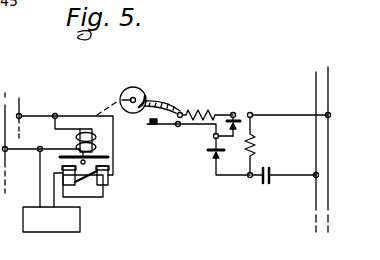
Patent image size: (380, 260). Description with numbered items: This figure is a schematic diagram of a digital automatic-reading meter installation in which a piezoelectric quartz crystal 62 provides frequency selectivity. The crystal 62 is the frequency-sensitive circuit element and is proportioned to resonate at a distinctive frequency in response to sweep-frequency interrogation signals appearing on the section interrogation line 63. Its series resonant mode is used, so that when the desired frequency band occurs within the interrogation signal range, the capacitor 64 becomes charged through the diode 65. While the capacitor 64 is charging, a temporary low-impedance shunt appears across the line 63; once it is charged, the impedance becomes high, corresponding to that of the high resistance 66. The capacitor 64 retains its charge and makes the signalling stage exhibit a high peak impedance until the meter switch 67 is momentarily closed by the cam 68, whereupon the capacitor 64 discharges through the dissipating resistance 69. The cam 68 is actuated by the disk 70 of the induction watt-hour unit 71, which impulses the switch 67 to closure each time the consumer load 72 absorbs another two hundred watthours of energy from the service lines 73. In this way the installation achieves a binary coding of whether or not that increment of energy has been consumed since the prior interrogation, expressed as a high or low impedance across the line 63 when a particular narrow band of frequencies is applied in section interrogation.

The piezoelectric quartz crystal 62 is at (268, 184).
The section interrogation line 63 is at (328, 67).
The capacitor 64 is at (240, 116).
The diode 65 is at (209, 158).
The high resistance 66 is at (253, 143).
The meter switch 67 is at (136, 113).
The cam 68 is at (139, 88).
The dissipating resistance 69 is at (198, 112).
The disk 70 is at (108, 157).
The induction watt-hour unit 71 is at (78, 112).
The consumer load 72 is at (80, 220).
The service lines 73 is at (5, 105).